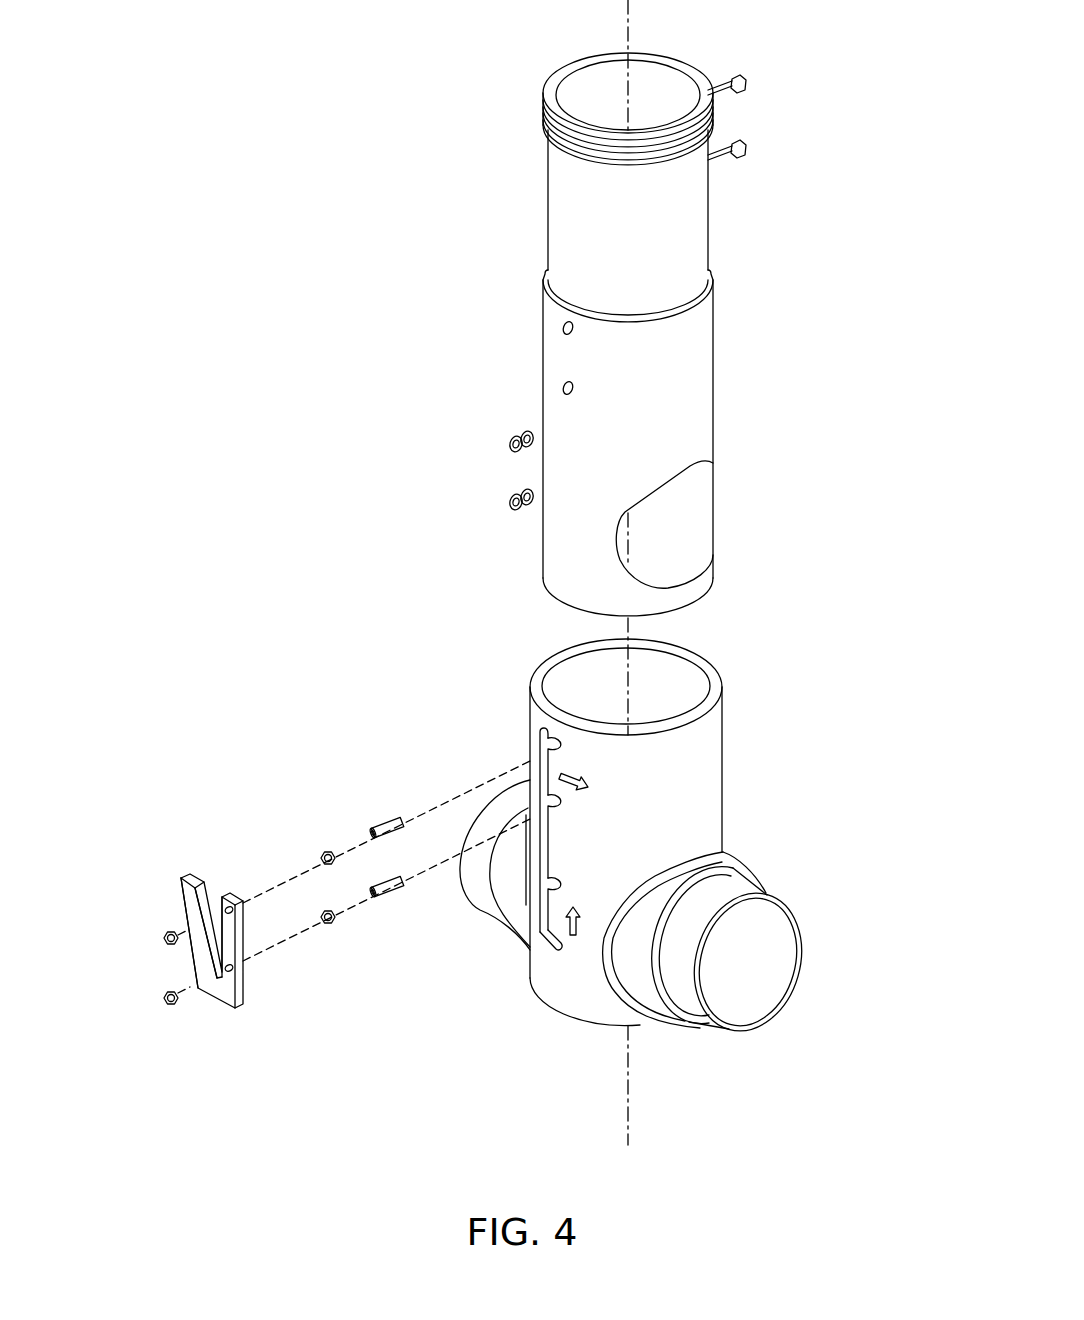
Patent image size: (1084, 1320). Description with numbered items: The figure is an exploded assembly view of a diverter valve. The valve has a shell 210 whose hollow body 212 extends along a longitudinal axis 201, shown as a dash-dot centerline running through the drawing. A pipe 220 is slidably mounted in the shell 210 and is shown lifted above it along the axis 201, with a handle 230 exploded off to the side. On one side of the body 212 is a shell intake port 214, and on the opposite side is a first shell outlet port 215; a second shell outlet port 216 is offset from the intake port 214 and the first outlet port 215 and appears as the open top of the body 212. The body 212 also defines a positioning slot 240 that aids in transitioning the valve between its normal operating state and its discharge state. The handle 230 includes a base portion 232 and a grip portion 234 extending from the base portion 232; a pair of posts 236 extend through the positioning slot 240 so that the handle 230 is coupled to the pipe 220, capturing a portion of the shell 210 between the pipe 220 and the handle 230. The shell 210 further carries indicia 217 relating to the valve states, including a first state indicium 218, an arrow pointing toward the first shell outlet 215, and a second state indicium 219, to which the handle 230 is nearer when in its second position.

The longitudinal axis 201 is at (631, 28).
The shell 210 is at (650, 837).
The hollow body 212 is at (722, 780).
The shell intake port 214 is at (459, 880).
The first shell outlet port 215 is at (749, 977).
The second shell outlet port 216 is at (674, 683).
The indicia 217 is at (571, 967).
The first state indicium 218 is at (585, 789).
The second state indicium 219 is at (579, 908).
The pipe 220 is at (455, 295).
The handle 230 is at (346, 869).
The base portion 232 is at (243, 977).
The grip portion 234 is at (192, 876).
The posts 236 is at (390, 823).
The positioning slot 240 is at (516, 741).